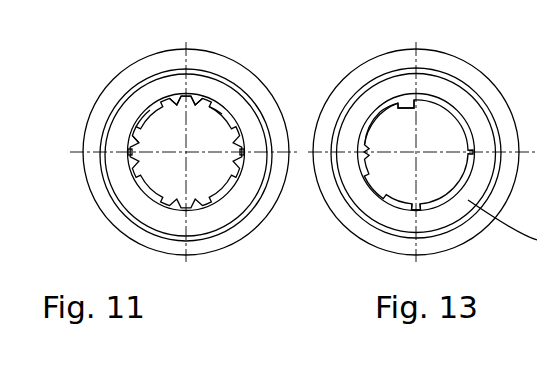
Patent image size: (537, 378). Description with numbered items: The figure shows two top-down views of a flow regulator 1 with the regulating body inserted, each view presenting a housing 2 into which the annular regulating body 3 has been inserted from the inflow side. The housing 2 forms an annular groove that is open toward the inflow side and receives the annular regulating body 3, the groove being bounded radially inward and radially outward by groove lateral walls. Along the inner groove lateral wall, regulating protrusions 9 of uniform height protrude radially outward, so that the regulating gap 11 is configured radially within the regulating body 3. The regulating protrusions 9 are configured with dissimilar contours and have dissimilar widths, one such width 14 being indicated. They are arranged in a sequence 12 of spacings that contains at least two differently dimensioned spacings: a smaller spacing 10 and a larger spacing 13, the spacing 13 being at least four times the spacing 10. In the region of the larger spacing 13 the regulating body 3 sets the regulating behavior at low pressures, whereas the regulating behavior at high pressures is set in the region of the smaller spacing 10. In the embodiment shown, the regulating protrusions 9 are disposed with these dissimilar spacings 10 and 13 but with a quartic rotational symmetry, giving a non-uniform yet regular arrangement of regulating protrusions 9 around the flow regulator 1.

In FIG. 11, the flow regulator 1 is at (174, 183).
In FIG. 13, the flow regulator 1 is at (407, 174).
In FIG. 11, the housing 2 is at (110, 208).
In FIG. 13, the housing 2 is at (330, 240).
In FIG. 11, the regulating body 3 is at (235, 203).
In FIG. 13, the regulating body 3 is at (434, 154).
In FIG. 11, the regulating protrusions 9 is at (167, 100).
In FIG. 13, the regulating protrusions 9 is at (391, 99).
In FIG. 11, the spacing 10 is at (175, 95).
In FIG. 13, the spacing 10 is at (408, 97).
In FIG. 11, the regulating gap 11 is at (232, 120).
In FIG. 13, the regulating gap 11 is at (467, 122).
In FIG. 11, the sequence of spacings 12 is at (135, 121).
In FIG. 13, the sequence of spacings 12 is at (371, 120).
In FIG. 11, the spacing 13 is at (214, 108).
In FIG. 13, the spacing 13 is at (444, 200).
In FIG. 11, the width 14 is at (127, 137).
In FIG. 13, the width 14 is at (389, 100).